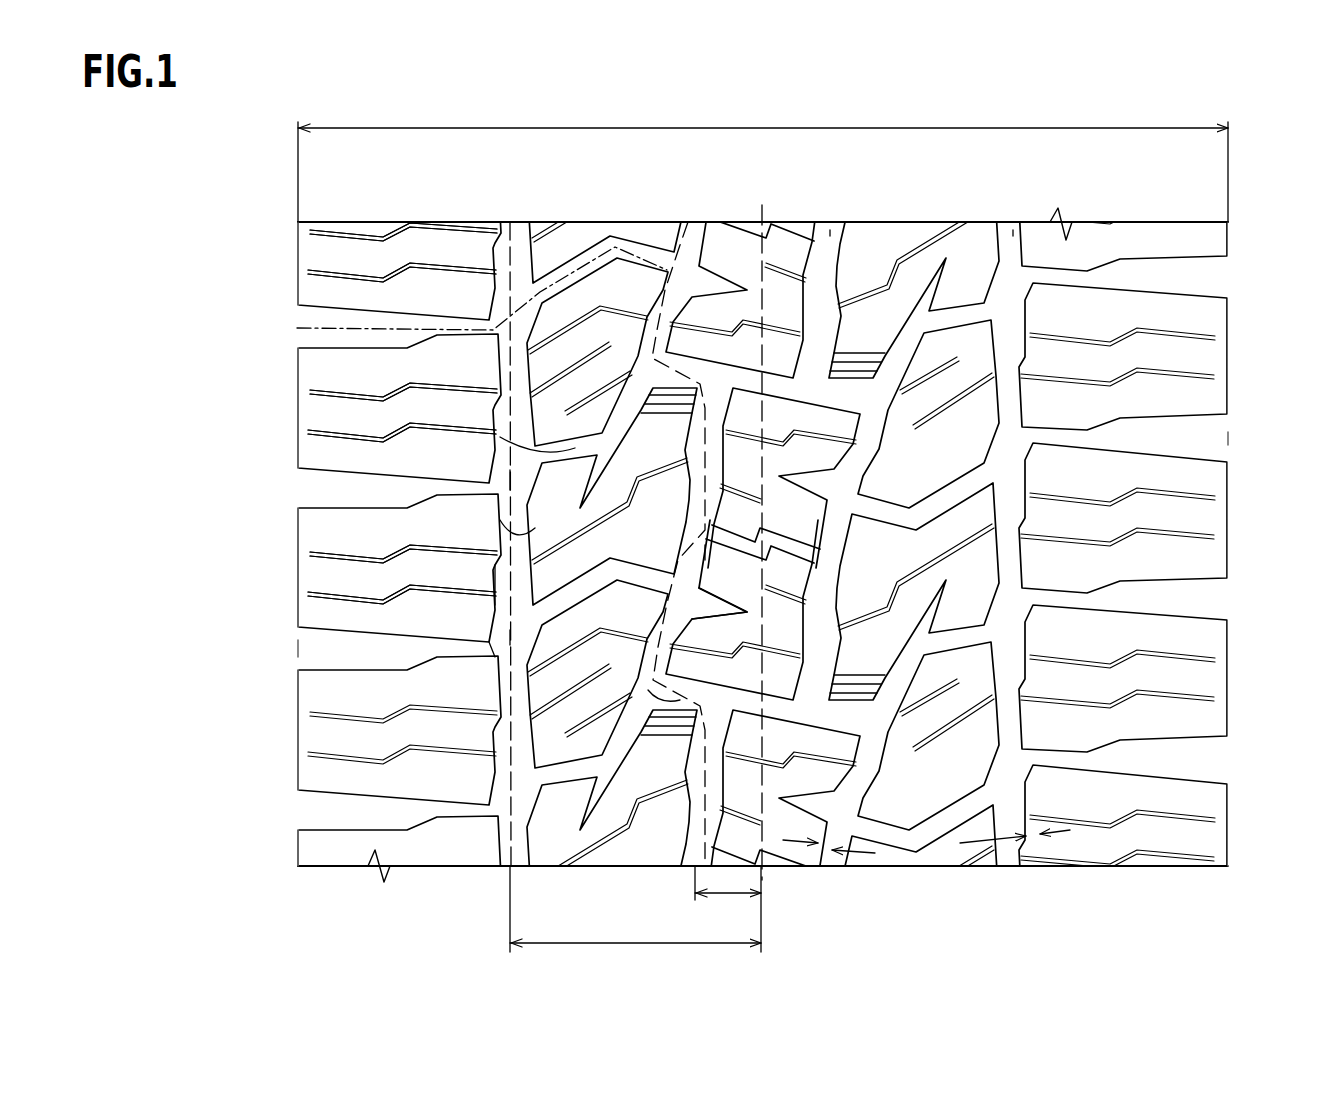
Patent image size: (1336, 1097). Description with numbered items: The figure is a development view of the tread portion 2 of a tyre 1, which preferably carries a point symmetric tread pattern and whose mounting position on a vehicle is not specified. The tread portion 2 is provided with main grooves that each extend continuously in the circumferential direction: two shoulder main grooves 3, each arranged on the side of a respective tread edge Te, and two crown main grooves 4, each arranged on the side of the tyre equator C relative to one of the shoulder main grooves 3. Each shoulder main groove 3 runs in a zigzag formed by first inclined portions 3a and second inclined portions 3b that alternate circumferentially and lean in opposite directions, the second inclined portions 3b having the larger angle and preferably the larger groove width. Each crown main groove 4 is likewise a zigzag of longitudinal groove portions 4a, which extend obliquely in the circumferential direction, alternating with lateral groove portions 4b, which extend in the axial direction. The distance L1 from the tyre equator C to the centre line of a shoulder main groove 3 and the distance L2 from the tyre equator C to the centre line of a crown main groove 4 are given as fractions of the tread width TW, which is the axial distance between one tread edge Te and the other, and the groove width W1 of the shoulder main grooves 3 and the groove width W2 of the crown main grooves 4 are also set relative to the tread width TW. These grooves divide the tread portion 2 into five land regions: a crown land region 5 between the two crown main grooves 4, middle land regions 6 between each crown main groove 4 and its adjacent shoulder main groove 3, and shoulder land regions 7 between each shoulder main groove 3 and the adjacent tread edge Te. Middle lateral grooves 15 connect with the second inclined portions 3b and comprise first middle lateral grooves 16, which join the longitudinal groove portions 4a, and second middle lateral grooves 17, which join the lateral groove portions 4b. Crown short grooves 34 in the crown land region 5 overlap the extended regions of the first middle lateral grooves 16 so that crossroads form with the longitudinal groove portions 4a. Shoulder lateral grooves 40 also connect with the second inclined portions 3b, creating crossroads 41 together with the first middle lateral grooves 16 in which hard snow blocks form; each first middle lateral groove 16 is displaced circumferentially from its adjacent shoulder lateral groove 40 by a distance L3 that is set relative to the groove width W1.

The tyre 1 is at (945, 217).
The tread portion 2 is at (645, 217).
The shoulder main groove 3 is at (513, 252).
The first inclined portion 3a is at (503, 583).
The second inclined portion 3b is at (508, 482).
The crown main groove 4 is at (688, 247).
The longitudinal groove portion 4a is at (703, 553).
The lateral groove portion 4b is at (850, 720).
The crown land region 5 is at (783, 300).
The middle land region 6 is at (590, 300).
The shoulder land region 7 is at (400, 258).
The middle lateral groove 15 is at (900, 347).
The first middle lateral groove 16 is at (572, 597).
The second middle lateral groove 17 is at (553, 447).
The crown short groove 34 is at (725, 598).
The shoulder lateral groove 40 is at (357, 652).
The crossroads 41 is at (500, 650).
The tread edge Te is at (297, 253).
The tread width TW is at (763, 159).
The tyre equator C is at (761, 528).
The distance L1 is at (635, 921).
The distance L2 is at (728, 897).
The distance L3 is at (296, 326).
The groove width W1 is at (1020, 838).
The groove width W2 is at (835, 848).